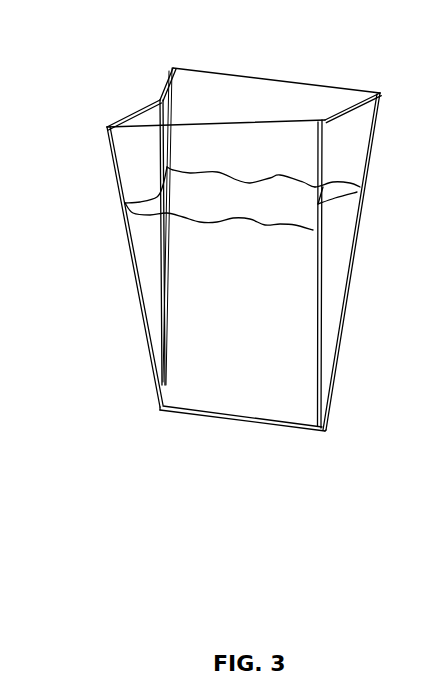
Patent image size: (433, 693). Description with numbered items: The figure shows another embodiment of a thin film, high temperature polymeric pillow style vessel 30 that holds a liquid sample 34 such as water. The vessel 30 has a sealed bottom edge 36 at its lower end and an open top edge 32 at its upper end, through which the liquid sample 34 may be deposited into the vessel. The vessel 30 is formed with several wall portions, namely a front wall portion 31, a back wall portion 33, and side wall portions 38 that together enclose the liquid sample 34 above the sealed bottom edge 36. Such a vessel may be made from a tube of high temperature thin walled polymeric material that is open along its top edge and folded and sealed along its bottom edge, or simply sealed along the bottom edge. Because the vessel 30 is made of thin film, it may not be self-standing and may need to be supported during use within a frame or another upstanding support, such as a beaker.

The vessel 30 is at (107, 78).
The front wall portion 31 is at (143, 247).
The open top edge 32 is at (310, 82).
The back wall portion 33 is at (240, 90).
The liquid sample 34 is at (244, 286).
The sealed bottom edge 36 is at (322, 430).
The side wall portions 38 is at (337, 215).